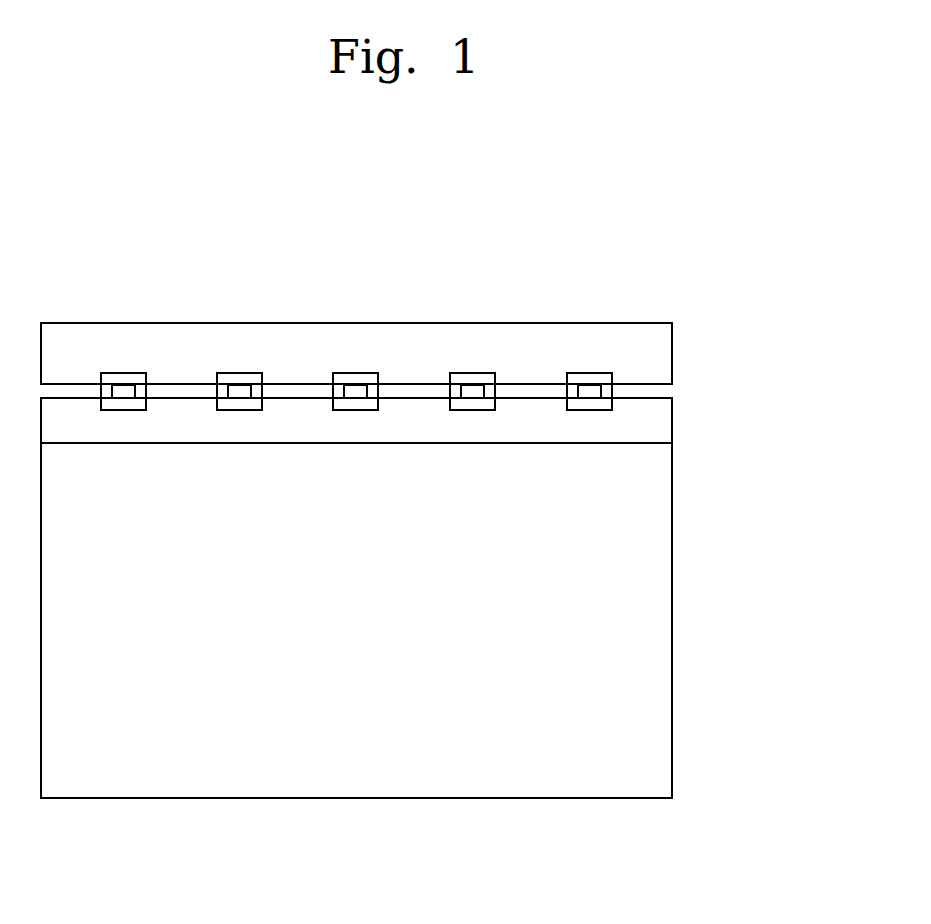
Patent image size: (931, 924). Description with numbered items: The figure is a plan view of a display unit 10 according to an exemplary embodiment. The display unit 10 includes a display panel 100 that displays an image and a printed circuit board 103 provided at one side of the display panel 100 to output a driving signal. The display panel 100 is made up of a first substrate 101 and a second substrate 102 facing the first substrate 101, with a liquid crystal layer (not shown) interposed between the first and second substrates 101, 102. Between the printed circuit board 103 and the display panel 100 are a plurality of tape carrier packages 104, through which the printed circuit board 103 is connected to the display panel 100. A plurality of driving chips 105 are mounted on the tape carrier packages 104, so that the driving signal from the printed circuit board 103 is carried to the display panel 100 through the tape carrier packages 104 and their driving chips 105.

The display unit 10 is at (621, 314).
The display panel 100 is at (758, 413).
The first substrate 101 is at (664, 424).
The second substrate 102 is at (664, 512).
The printed circuit board 103 is at (664, 356).
The tape carrier package 104 is at (247, 373).
The driving chip 105 is at (235, 385).